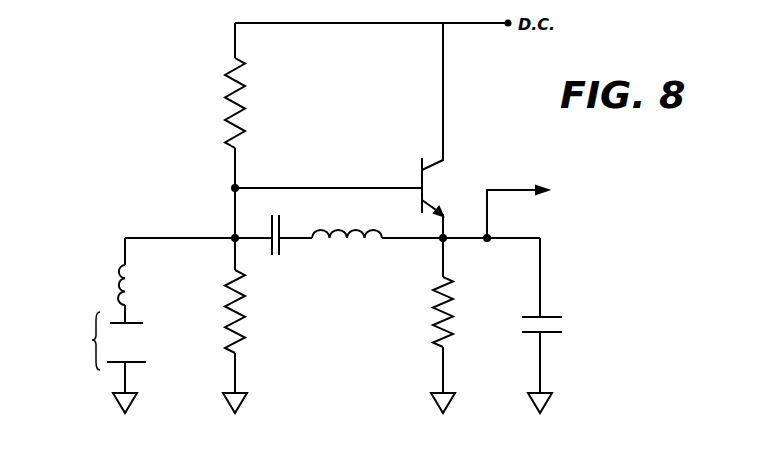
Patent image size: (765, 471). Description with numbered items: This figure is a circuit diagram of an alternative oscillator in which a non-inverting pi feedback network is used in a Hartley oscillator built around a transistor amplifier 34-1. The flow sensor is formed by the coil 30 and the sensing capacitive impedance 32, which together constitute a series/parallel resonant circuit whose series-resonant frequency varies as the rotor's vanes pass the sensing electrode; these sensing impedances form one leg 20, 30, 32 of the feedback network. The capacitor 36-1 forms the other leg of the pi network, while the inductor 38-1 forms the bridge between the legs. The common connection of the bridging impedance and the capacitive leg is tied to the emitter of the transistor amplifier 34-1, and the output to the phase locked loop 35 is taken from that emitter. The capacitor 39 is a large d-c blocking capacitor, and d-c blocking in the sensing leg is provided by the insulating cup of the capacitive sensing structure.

The leg 20 is at (185, 236).
The coil 30 is at (120, 268).
The sensing capacitive impedance 32 is at (90, 339).
The transistor amplifier 34-1 is at (419, 174).
The phase locked loop 35 is at (533, 209).
The capacitor 36-1 is at (576, 325).
The inductor 38-1 is at (346, 244).
The capacitor 39 is at (280, 226).